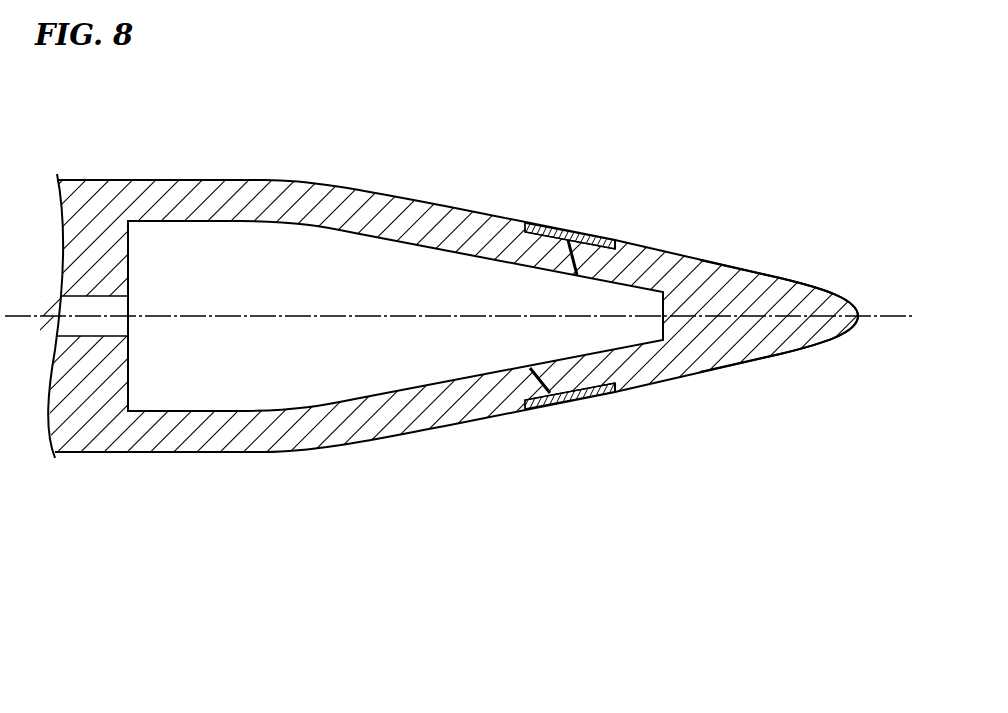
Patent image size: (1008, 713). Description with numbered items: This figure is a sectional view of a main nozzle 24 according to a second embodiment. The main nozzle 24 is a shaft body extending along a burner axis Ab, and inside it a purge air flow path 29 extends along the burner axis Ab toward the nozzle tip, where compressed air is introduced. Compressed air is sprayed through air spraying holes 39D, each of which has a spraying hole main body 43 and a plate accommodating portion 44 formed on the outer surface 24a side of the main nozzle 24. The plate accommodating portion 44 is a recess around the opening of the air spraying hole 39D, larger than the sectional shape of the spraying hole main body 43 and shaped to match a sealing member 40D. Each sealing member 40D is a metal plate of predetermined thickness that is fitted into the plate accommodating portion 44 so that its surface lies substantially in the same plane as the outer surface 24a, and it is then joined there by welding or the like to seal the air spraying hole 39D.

The main nozzle 24 is at (380, 194).
The outer surface 24a is at (733, 262).
The purge air flow path 29 is at (214, 218).
The air spraying hole 39D is at (522, 222).
The sealing member 40D is at (578, 236).
The spraying hole main body 43 is at (560, 262).
The plate accommodating portion 44 is at (609, 238).
The burner axis Ab is at (890, 316).